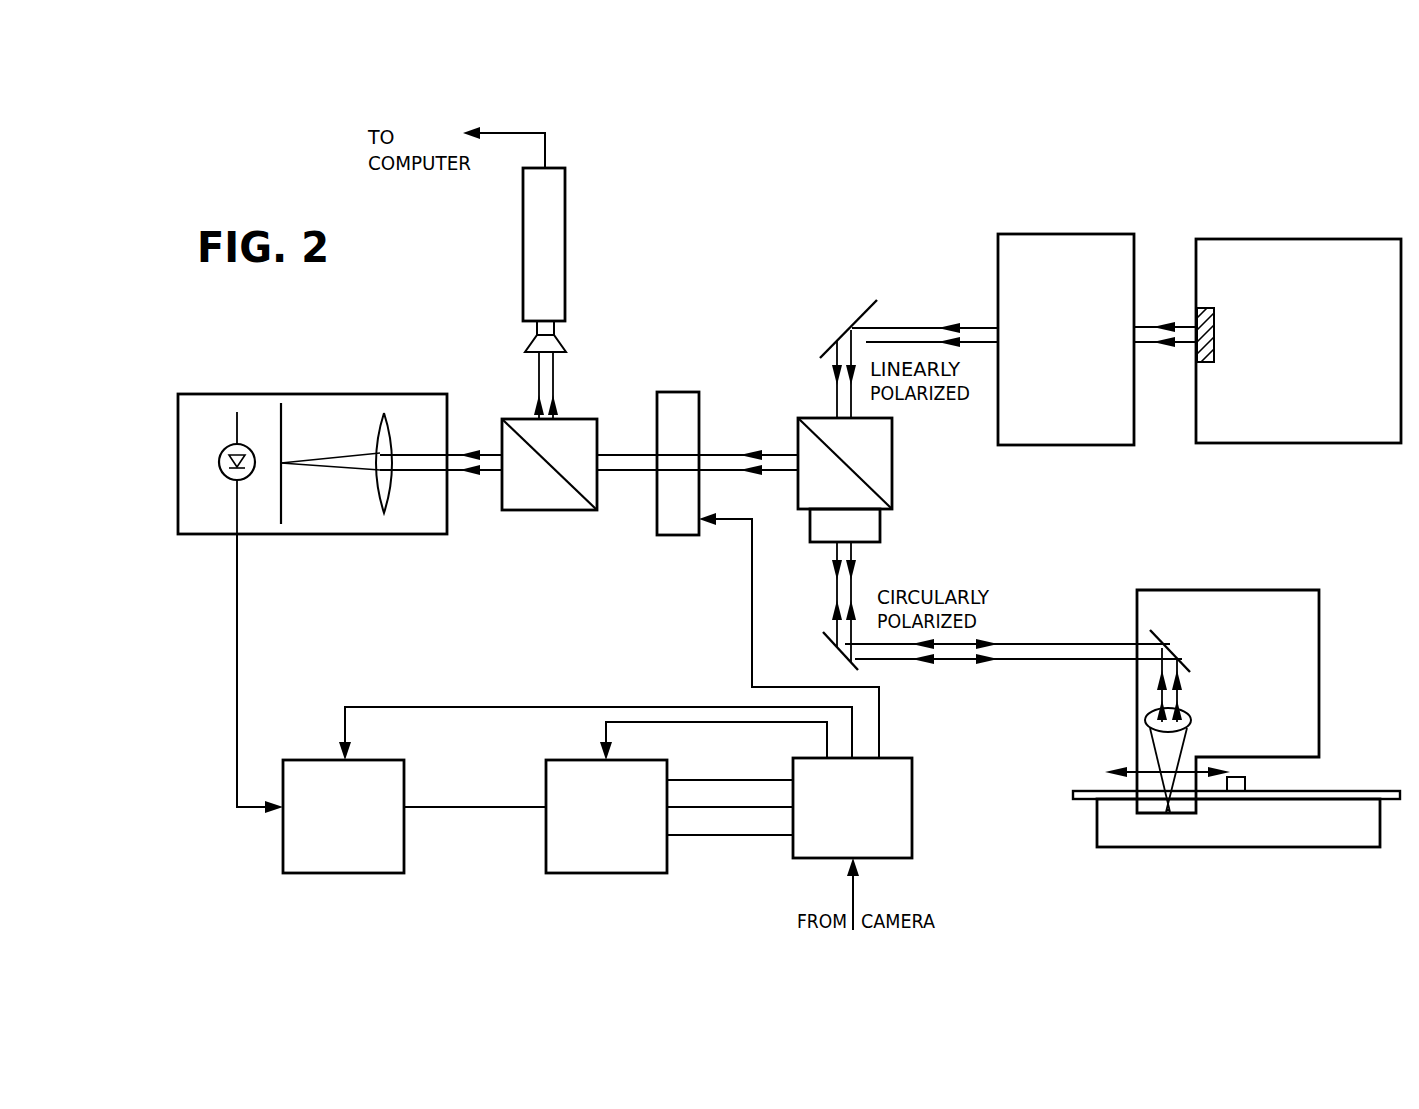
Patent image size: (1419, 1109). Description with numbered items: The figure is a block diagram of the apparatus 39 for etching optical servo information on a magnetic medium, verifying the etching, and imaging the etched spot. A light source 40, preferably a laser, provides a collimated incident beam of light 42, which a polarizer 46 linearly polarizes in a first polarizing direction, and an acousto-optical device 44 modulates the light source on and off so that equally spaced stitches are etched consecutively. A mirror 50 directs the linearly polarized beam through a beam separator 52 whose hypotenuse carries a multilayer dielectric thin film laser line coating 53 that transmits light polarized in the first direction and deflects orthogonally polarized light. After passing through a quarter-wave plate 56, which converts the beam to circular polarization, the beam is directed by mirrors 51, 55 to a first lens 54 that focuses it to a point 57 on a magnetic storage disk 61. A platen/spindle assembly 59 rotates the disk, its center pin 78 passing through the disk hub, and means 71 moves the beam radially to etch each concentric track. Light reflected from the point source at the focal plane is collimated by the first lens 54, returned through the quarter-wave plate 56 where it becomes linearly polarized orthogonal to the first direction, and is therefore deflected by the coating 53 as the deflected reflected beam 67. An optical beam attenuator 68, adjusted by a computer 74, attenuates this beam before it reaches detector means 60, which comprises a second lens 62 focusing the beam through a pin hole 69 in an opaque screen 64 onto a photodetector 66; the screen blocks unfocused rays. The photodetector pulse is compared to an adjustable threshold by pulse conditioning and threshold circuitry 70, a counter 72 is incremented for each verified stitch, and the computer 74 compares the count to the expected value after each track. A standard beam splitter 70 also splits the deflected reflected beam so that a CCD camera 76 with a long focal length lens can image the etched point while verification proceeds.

The apparatus 39 is at (750, 229).
The light source 40 is at (1335, 239).
The incident beam of light 42 is at (1162, 345).
The acousto-optical device 44 is at (1066, 234).
The polarizer 46 is at (1196, 318).
The mirror 50 is at (870, 308).
The mirror 51 is at (845, 672).
The beam separator 52 is at (876, 438).
The multilayer dielectric thin film laser line coating 53 is at (860, 476).
The first lens 54 is at (1185, 716).
The mirror 55 is at (1155, 632).
The quarter-wave plate 56 is at (865, 526).
The point 57 is at (1158, 817).
The platen/spindle assembly 59 is at (1332, 830).
The detector means 60 is at (308, 410).
The magnetic storage disk 61 is at (1392, 790).
The second lens 62 is at (388, 422).
The opaque screen 64 is at (282, 504).
The photodetector 66 is at (248, 448).
The deflected reflected beam 67 is at (716, 450).
The optical beam attenuator 68 is at (690, 398).
The pin hole 69 is at (283, 466).
The pulse conditioning and threshold circuitry 70 is at (530, 500).
The means for moving the incident beam radially 71 is at (1306, 618).
The counter 72 is at (545, 768).
The computer 74 is at (903, 775).
The CCD camera 76 is at (570, 192).
The center pin 78 is at (1238, 776).